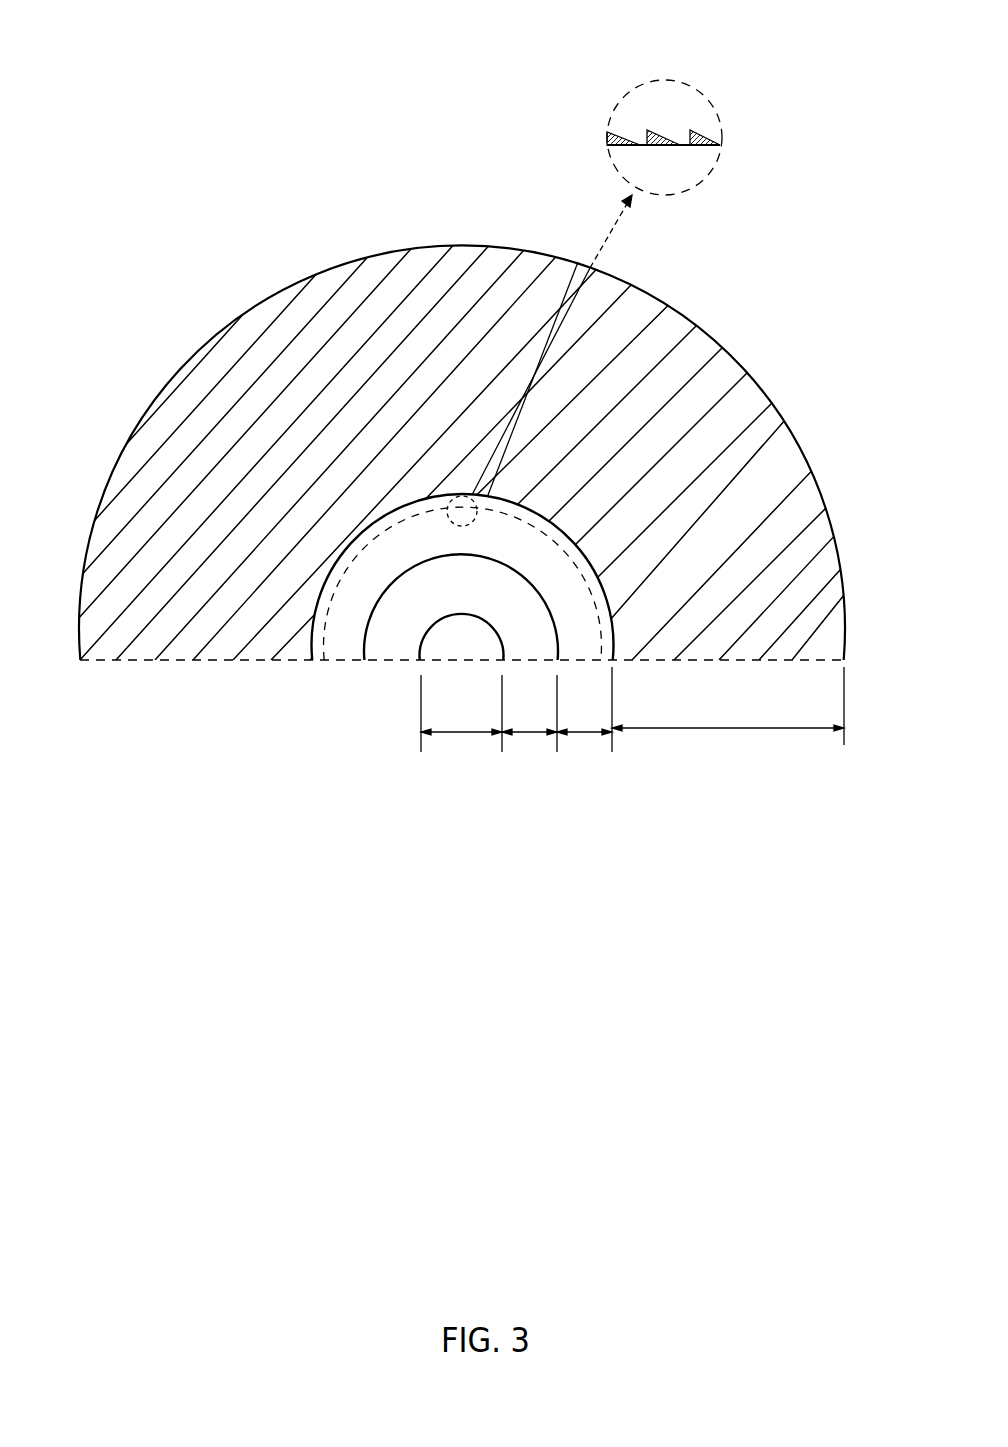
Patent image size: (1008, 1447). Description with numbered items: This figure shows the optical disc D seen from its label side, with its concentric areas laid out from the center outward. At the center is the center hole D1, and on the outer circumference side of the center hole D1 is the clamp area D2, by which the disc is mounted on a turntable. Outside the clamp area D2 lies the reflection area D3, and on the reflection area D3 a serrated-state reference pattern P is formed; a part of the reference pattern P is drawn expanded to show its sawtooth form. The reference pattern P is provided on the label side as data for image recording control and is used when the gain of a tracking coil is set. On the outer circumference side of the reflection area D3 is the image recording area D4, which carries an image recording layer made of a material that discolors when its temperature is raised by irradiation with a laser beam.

The optical disc D is at (152, 400).
The reference pattern P is at (733, 55).
The center hole D1 is at (460, 733).
The clamp area D2 is at (527, 733).
The reflection area D3 is at (582, 733).
The image recording area D4 is at (727, 730).